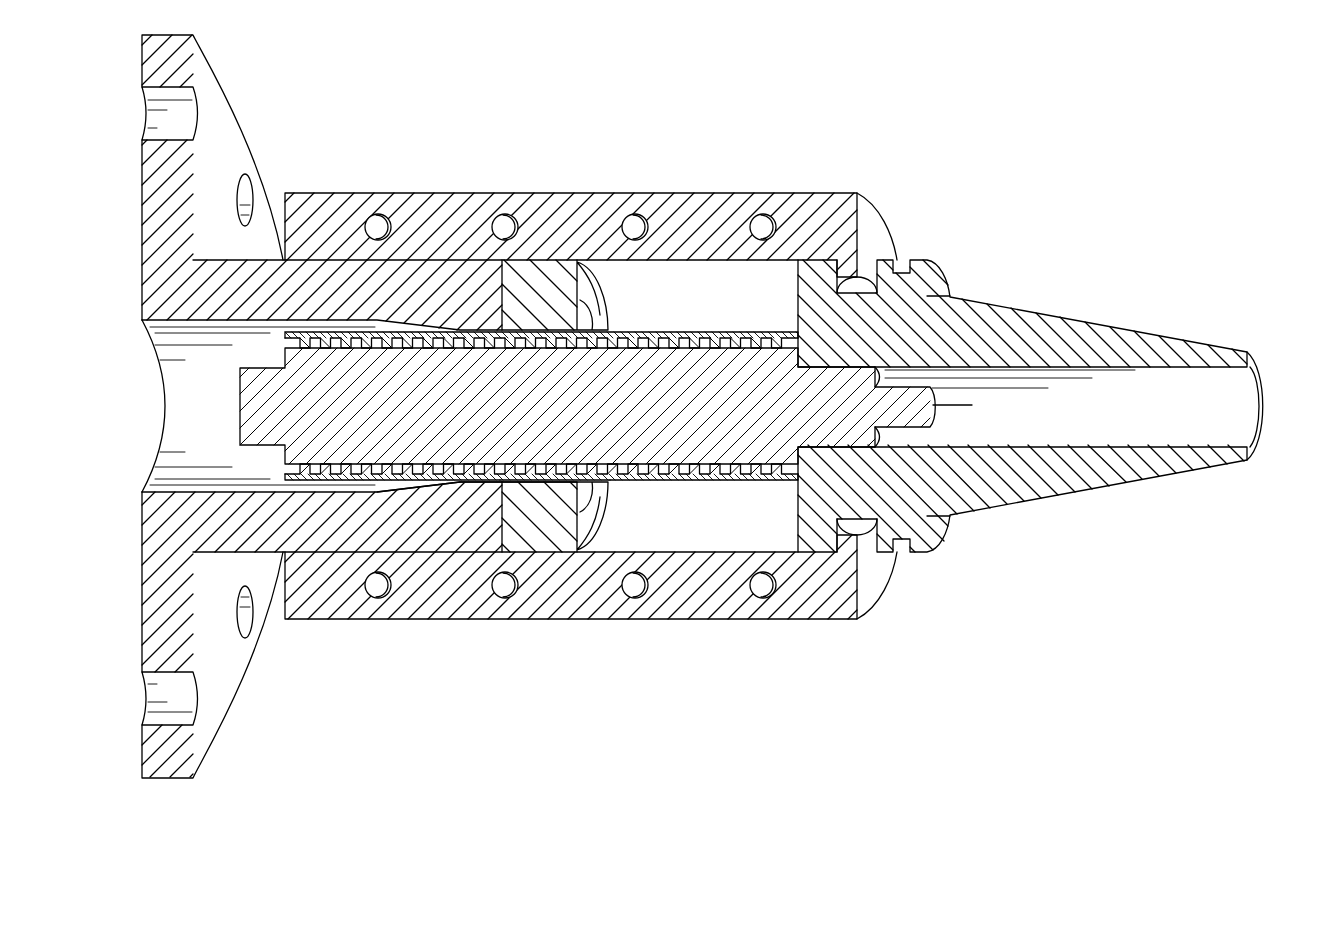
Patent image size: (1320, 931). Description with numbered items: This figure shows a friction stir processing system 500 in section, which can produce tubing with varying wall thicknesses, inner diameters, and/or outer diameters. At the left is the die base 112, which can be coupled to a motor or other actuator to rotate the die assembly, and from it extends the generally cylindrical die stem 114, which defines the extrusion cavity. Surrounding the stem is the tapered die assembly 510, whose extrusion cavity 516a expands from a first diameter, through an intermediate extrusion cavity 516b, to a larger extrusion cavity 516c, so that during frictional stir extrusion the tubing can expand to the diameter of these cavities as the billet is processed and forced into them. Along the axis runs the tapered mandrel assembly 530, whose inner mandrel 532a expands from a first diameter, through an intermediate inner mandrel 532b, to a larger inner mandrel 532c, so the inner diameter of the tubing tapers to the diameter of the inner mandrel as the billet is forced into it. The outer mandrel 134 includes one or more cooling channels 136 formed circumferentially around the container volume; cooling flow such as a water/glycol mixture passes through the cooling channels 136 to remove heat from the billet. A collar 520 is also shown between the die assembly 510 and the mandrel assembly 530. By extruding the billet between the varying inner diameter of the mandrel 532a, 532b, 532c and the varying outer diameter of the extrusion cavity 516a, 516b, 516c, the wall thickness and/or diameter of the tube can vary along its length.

The friction stir processing system 500 is at (1168, 95).
The die base 112 is at (212, 60).
The die stem 114 is at (437, 277).
The outer mandrel 134 is at (850, 208).
The cooling channels 136 is at (773, 228).
The die assembly 510 is at (333, 277).
The ferrule nut 520 is at (573, 277).
The tapered mandrel assembly 530 is at (882, 217).
The extrusion cavity 516a is at (495, 485).
The intermediate extrusion cavity 516b is at (418, 500).
The extrusion cavity 516c is at (375, 492).
The inner mandrel 532a is at (762, 483).
The intermediate inner mandrel 532b is at (572, 485).
The inner mandrel 532c is at (352, 486).